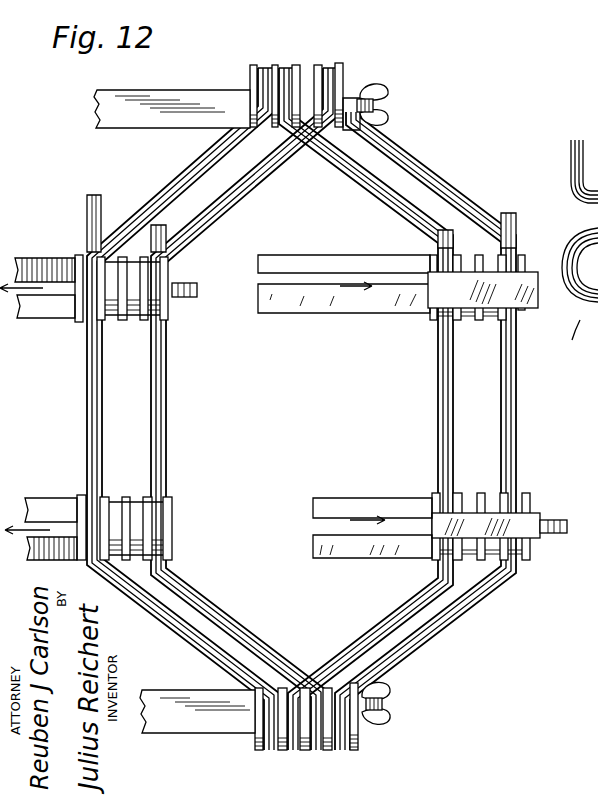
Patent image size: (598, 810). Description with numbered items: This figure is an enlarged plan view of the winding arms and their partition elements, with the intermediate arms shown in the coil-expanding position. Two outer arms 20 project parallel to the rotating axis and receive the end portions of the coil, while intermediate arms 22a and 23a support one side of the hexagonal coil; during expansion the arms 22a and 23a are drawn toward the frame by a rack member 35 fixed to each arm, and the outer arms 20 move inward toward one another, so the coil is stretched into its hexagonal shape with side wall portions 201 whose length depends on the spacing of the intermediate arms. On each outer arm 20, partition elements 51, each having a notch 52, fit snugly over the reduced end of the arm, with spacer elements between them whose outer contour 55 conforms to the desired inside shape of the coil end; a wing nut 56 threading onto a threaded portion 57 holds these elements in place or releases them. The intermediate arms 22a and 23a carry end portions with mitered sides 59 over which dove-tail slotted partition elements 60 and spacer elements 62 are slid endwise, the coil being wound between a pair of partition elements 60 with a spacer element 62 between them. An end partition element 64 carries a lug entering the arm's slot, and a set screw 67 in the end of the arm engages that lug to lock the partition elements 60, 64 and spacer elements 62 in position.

The outer arm 20 is at (185, 100).
The intermediate arm 22a is at (52, 498).
The intermediate arm 23a is at (32, 318).
The rack member 35 is at (50, 258).
The partition element 51 is at (340, 63).
The notch 52 is at (330, 128).
The outer contour 55 is at (296, 66).
The wing nut 56 is at (382, 88).
The threaded portion 57 is at (378, 106).
The mitered sides 59 is at (455, 300).
The partition element 60 is at (86, 240).
The spacer element 62 is at (140, 322).
The end partition element 64 is at (170, 312).
The set screw 67 is at (568, 526).
The side wall portions 201 is at (92, 392).